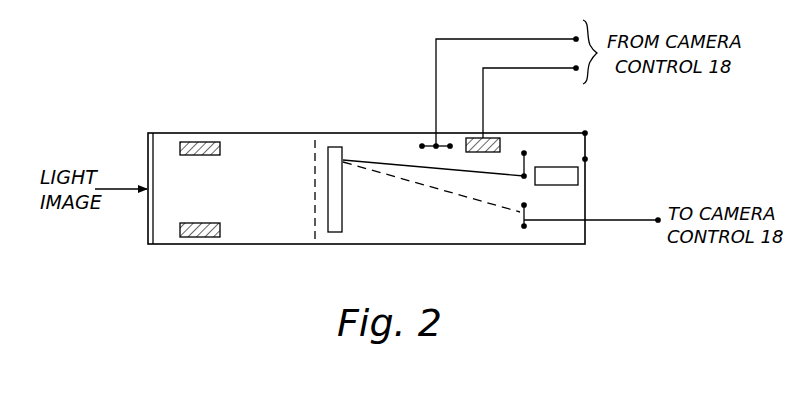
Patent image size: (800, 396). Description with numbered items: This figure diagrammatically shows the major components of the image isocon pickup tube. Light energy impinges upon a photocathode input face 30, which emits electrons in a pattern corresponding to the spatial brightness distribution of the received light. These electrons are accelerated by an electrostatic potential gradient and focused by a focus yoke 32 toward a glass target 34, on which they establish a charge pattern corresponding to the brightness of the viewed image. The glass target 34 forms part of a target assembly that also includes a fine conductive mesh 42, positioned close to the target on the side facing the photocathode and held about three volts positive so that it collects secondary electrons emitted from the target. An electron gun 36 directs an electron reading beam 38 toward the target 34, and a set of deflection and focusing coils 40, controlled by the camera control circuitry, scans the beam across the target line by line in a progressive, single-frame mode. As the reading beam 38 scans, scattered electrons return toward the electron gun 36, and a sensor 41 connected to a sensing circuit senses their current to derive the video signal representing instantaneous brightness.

The photocathode input face 30 is at (148, 160).
The focus yoke 32 is at (193, 142).
The glass target 34 is at (342, 215).
The electron gun 36 is at (558, 167).
The electron reading beam 38 is at (397, 163).
The deflection and focusing coils 40 is at (474, 128).
The sensor 41 is at (528, 160).
The fine conductive mesh 42 is at (313, 155).